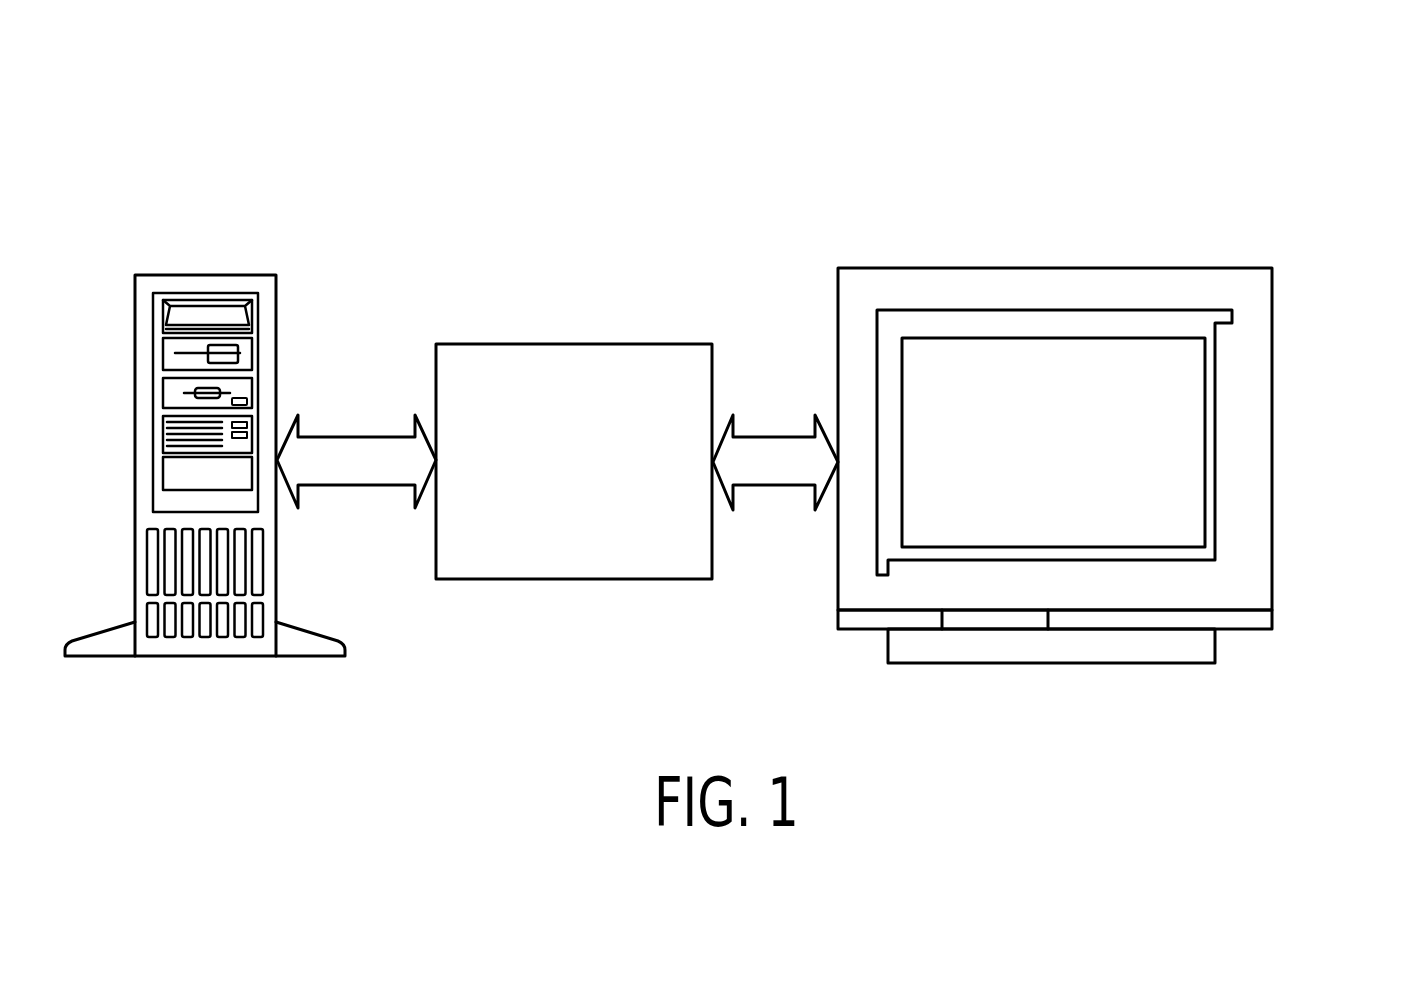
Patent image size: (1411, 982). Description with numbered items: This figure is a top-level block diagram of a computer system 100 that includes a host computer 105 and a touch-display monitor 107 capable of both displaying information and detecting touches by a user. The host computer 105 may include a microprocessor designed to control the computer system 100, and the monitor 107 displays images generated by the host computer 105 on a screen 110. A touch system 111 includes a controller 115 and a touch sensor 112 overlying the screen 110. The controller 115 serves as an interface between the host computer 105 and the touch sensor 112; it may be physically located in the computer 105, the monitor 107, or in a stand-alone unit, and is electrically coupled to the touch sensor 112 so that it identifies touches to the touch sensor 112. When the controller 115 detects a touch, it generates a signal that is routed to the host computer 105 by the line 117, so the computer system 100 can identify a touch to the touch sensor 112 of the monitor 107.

The computer system 100 is at (1024, 158).
The host computer 105 is at (232, 276).
The touch-display monitor 107 is at (1183, 268).
The screen 110 is at (1185, 443).
The touch system 111 is at (761, 271).
The touch sensor 112 is at (1033, 525).
The controller 115 is at (672, 562).
The line 117 is at (325, 437).